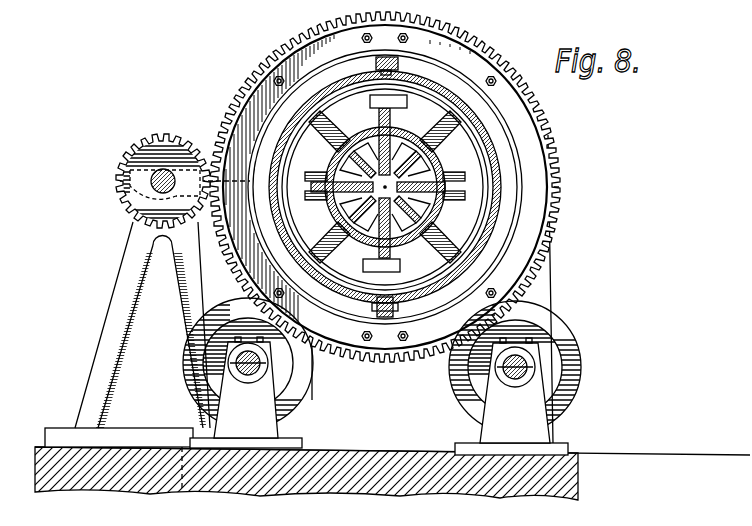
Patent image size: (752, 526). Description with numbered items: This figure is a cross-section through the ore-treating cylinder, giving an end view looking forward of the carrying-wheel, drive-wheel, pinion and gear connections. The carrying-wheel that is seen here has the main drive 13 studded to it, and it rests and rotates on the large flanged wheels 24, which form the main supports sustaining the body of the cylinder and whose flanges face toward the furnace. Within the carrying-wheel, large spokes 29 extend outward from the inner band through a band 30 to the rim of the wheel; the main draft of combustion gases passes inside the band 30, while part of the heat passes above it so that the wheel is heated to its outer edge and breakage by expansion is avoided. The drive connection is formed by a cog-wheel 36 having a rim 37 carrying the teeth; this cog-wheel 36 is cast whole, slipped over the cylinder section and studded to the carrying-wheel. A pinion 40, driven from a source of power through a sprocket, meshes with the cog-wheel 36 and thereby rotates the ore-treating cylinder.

The main drive 13 is at (533, 200).
The flanged wheels 24 is at (190, 354).
The spokes 29 is at (438, 133).
The band 30 is at (490, 175).
The cog-wheel 36 is at (546, 128).
The rim 37 is at (518, 115).
The pinion 40 is at (159, 143).